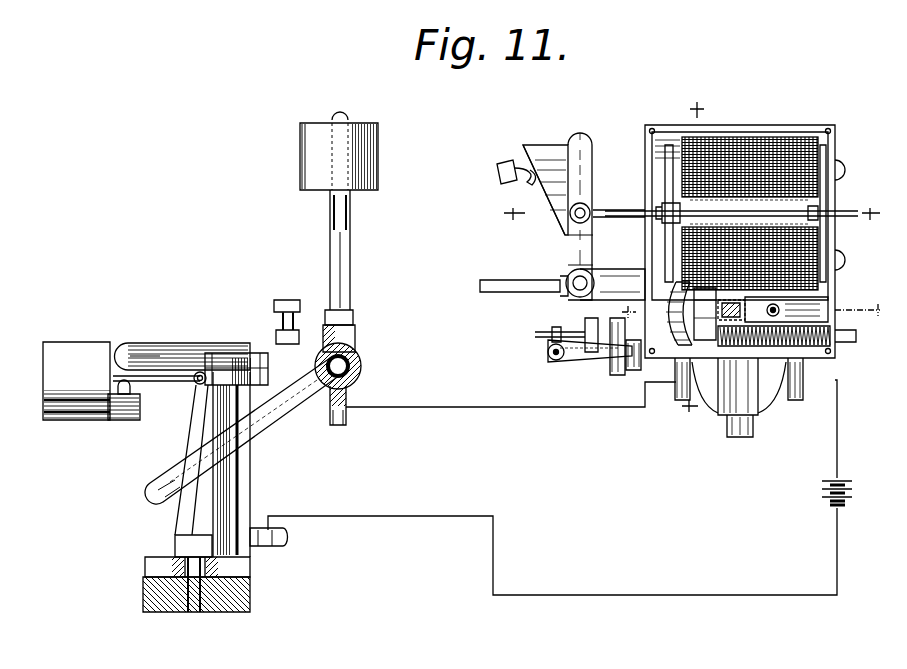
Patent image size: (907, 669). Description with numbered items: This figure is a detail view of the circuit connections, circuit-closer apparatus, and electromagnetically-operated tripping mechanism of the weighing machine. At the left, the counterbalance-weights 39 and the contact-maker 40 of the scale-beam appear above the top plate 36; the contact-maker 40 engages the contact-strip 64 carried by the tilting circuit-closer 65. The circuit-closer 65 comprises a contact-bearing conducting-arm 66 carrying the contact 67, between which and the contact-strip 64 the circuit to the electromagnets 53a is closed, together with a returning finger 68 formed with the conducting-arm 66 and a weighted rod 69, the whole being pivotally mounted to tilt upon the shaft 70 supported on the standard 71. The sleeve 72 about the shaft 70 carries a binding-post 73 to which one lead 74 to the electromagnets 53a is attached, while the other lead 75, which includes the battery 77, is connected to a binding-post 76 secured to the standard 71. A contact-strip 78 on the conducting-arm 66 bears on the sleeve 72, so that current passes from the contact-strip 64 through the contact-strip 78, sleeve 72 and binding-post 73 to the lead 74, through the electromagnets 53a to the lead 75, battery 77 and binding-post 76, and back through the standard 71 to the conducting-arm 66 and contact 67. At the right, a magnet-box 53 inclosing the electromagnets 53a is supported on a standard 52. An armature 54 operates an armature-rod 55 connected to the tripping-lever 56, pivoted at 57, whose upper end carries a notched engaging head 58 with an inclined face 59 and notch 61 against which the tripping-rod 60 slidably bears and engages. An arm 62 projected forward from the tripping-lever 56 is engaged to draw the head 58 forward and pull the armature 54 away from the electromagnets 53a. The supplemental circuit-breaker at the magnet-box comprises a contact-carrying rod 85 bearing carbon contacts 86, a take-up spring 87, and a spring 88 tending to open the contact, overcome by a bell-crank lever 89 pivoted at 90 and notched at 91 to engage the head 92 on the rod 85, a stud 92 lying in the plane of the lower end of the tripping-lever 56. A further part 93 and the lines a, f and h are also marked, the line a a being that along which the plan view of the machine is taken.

The top plate 36 is at (250, 588).
The counterbalance-weights 39 is at (76, 381).
The contact-maker 40 is at (140, 386).
The standard 52 is at (755, 424).
The magnet-box 53 is at (765, 125).
The electromagnets 53a is at (808, 137).
The armature 54 is at (662, 170).
The armature-rod 55 is at (597, 220).
The tripping-lever 56 is at (580, 216).
The pivot 57 is at (598, 270).
The notched engaging head 58 is at (545, 190).
The inclined face 59 is at (548, 204).
The tripping-rod 60 is at (520, 180).
The notch 61 is at (530, 164).
The arm 62 is at (546, 279).
The contact-strip 64 is at (157, 381).
The tilting circuit-closer 65 is at (255, 352).
The contact-bearing conducting-arm 66 is at (170, 344).
The contact 67 is at (153, 358).
The returning finger 68 is at (244, 431).
The weighted rod 69 is at (351, 248).
The shaft 70 is at (360, 357).
The standard 71 is at (195, 460).
The sleeve 72 is at (363, 366).
The binding-post 73 is at (347, 397).
The lead 74 is at (446, 404).
The lead 75 is at (494, 552).
The binding-post 76 is at (272, 547).
The battery 77 is at (850, 492).
The contact-strip 78 is at (316, 345).
The contact-carrying rod 85 is at (672, 346).
The carbon contacts 86 is at (728, 306).
The spring 87 is at (832, 298).
The spring 88 is at (840, 333).
The bell-crank lever 89 is at (550, 352).
The pivot 90 is at (556, 361).
The notch 91 is at (612, 372).
The head 92 is at (640, 371).
The pin 93 is at (570, 328).
The line a a is at (693, 212).
The section line f is at (697, 261).
The section line h is at (750, 308).